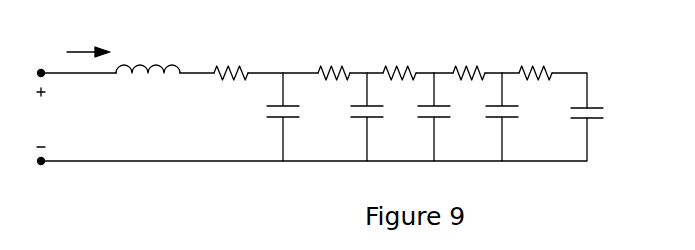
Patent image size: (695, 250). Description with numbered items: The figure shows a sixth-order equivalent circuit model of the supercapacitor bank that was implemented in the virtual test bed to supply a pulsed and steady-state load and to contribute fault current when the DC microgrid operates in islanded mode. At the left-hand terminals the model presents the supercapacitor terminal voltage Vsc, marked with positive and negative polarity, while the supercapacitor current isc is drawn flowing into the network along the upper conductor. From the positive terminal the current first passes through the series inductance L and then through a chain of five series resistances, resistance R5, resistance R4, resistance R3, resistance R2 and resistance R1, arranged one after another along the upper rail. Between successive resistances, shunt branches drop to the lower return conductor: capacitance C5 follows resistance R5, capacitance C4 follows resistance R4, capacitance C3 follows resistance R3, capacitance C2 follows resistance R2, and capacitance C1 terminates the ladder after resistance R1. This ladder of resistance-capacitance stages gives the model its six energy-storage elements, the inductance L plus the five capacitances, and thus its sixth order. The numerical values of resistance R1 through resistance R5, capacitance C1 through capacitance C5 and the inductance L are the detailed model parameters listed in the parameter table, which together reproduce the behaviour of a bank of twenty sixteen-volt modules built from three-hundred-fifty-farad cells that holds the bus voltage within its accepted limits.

The supercapacitor terminal voltage Vsc is at (41, 117).
The supercapacitor current isc is at (78, 51).
The series inductance L is at (148, 56).
The resistance R5 is at (231, 60).
The resistance R4 is at (334, 60).
The resistance R3 is at (399, 60).
The resistance R2 is at (469, 60).
The resistance R1 is at (535, 60).
The capacitance C5 is at (292, 117).
The capacitance C4 is at (378, 117).
The capacitance C3 is at (444, 117).
The capacitance C2 is at (512, 117).
The capacitance C1 is at (598, 116).